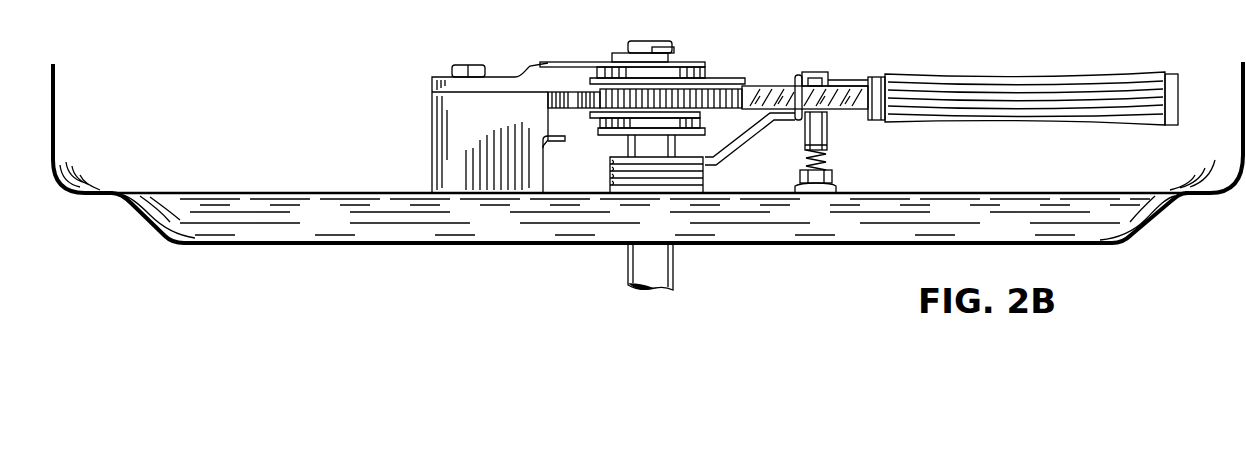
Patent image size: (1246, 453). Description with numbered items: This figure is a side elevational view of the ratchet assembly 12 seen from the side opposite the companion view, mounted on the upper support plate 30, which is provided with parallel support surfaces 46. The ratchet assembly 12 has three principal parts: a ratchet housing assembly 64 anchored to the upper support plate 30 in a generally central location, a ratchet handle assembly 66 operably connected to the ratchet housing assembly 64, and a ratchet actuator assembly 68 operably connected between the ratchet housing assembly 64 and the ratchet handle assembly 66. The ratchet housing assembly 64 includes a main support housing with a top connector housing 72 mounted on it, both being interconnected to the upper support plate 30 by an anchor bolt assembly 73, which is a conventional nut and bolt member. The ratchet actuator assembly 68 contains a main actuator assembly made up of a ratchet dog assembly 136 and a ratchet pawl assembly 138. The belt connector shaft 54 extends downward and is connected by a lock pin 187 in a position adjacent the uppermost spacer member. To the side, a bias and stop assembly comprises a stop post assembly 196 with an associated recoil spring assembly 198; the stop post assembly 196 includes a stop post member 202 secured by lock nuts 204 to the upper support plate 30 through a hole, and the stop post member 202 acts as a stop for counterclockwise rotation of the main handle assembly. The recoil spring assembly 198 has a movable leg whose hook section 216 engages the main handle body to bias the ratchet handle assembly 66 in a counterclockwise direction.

The ratchet assembly 12 is at (410, 113).
The upper support plate 30 is at (358, 232).
The parallel support surfaces 46 is at (231, 193).
The belt connector shaft 54 is at (657, 264).
The ratchet housing assembly 64 is at (483, 133).
The ratchet handle assembly 66 is at (1005, 95).
The ratchet actuator assembly 68 is at (582, 118).
The top connector housing 72 is at (712, 72).
The anchor bolt assembly 73 is at (462, 64).
The ratchet dog assembly 136 is at (567, 97).
The ratchet pawl assembly 138 is at (772, 86).
The lock pin 187 is at (612, 53).
The stop post assembly 196 is at (826, 132).
The recoil spring assembly 198 is at (618, 172).
The stop post member 202 is at (830, 74).
The lock nuts 204 is at (833, 180).
The hook section 216 is at (850, 87).